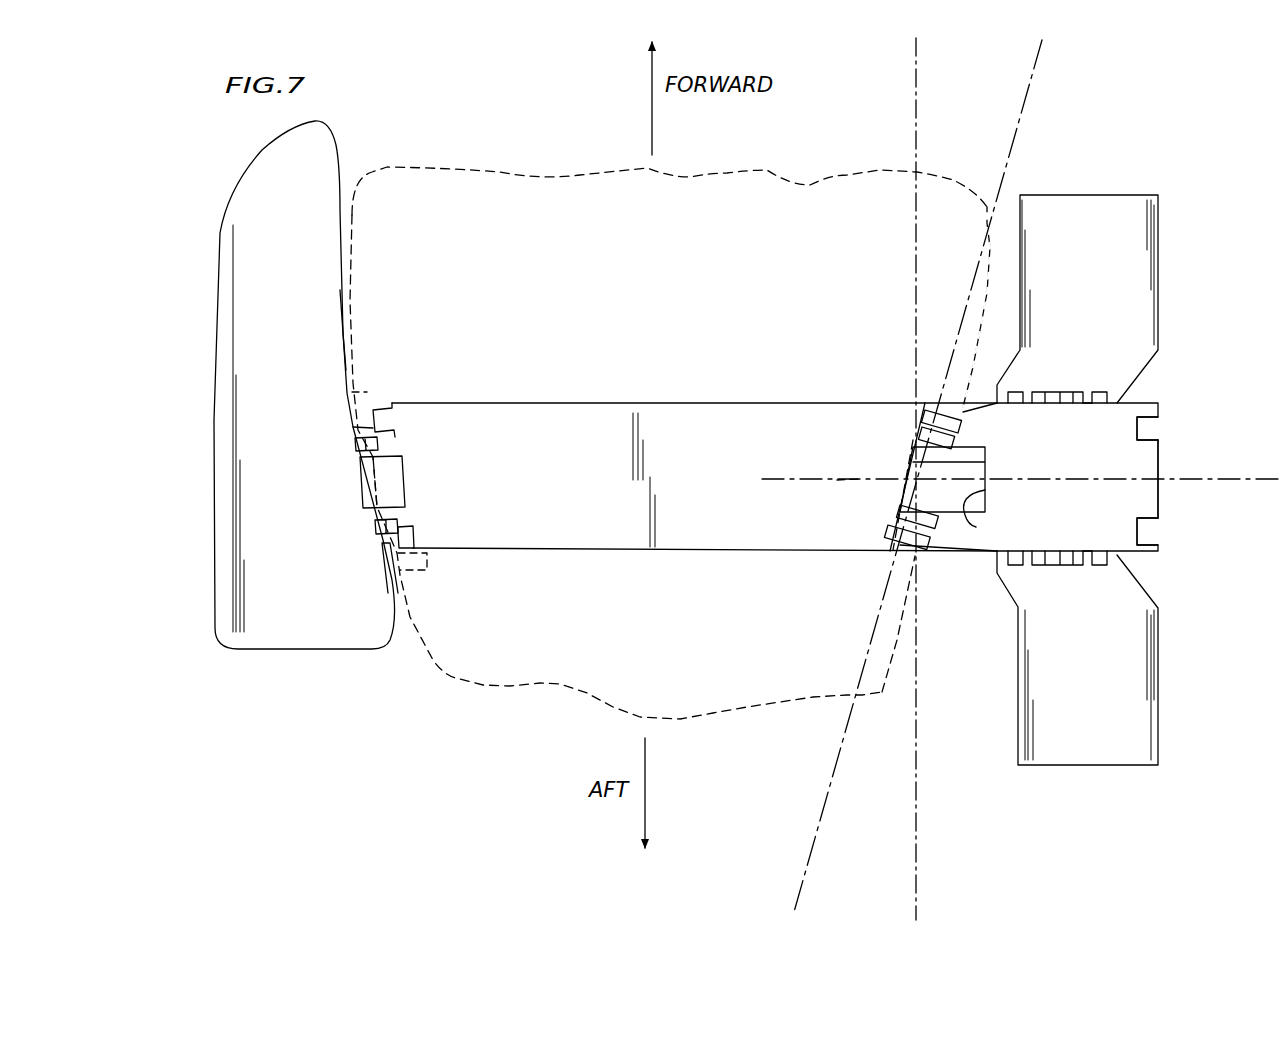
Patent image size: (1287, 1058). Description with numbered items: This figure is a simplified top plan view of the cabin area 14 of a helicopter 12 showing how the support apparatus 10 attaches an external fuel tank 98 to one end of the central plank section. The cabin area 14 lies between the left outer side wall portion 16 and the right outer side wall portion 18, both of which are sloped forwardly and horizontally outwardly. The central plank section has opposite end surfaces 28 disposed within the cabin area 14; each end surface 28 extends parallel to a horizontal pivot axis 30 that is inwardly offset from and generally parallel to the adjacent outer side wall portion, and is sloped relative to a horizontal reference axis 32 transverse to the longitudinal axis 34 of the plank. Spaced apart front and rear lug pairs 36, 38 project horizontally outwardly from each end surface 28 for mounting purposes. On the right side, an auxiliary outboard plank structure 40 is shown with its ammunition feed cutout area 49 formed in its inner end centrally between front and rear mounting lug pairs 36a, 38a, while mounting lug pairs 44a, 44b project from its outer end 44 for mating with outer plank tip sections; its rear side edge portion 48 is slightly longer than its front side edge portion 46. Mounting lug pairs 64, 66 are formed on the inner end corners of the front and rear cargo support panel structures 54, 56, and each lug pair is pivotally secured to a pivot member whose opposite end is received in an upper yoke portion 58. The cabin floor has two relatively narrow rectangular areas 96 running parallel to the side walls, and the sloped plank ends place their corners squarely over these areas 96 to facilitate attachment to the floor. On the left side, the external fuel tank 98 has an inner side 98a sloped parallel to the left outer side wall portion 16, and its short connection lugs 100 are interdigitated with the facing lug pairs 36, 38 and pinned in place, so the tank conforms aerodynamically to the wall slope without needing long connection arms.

The support apparatus 10 is at (588, 352).
The helicopter 12 is at (690, 170).
The cabin area 14 is at (549, 253).
The left outer side wall portion 16 is at (348, 262).
The right outer side wall portion 18 is at (988, 295).
The end surface 28 is at (362, 470).
The horizontal pivot axis 30 is at (1030, 97).
The horizontal reference axis 32 is at (916, 97).
The longitudinal axis 34 is at (776, 479).
The front lug pair 36 is at (374, 408).
The front mounting lug pair 36a is at (943, 402).
The rear lug pair 38 is at (400, 522).
The rear mounting lug pair 38a is at (952, 570).
The auxiliary outboard plank structure 40 is at (1162, 468).
The outer end 44 is at (1160, 505).
The mounting lug pair 44a is at (1160, 432).
The mounting lug pair 44b is at (1160, 545).
The front side edge portion 46 is at (1060, 398).
The rear side edge portion 48 is at (1058, 566).
The ammunition feed cutout area 49 is at (984, 517).
The front cargo support panel structure 54 is at (1163, 244).
The rear cargo support panel structure 56 is at (1163, 637).
The upper yoke portion 58 is at (1013, 393).
The mounting lug pair 64 is at (1030, 407).
The mounting lug pair 66 is at (1107, 407).
The narrow rectangular area 96 is at (413, 480).
The external fuel tank 98 is at (208, 491).
The inner side 98a is at (343, 332).
The connection lug 100 is at (355, 448).